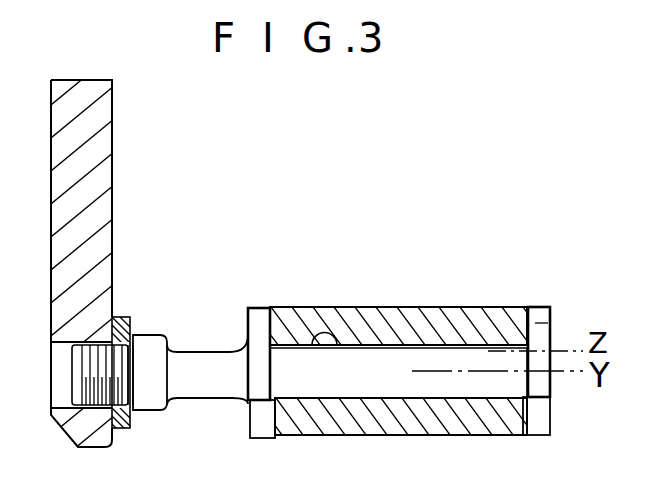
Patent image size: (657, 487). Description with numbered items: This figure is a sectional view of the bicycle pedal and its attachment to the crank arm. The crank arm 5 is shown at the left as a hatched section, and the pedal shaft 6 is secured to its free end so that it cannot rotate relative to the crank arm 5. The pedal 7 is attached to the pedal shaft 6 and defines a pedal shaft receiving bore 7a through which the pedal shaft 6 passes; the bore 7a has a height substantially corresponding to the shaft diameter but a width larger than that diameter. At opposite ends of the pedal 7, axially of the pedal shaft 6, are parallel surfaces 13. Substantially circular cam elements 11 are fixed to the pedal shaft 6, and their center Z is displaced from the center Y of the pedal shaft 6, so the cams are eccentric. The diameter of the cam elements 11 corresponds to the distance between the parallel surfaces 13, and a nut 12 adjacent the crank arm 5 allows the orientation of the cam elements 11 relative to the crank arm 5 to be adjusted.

The crank arm 5 is at (112, 185).
The pedal shaft 6 is at (197, 352).
The pedal 7 is at (365, 307).
The pedal shaft receiving bore 7a is at (334, 347).
The circular cam elements 11 is at (248, 318).
The nut 12 is at (128, 317).
The parallel surfaces 13 is at (262, 408).